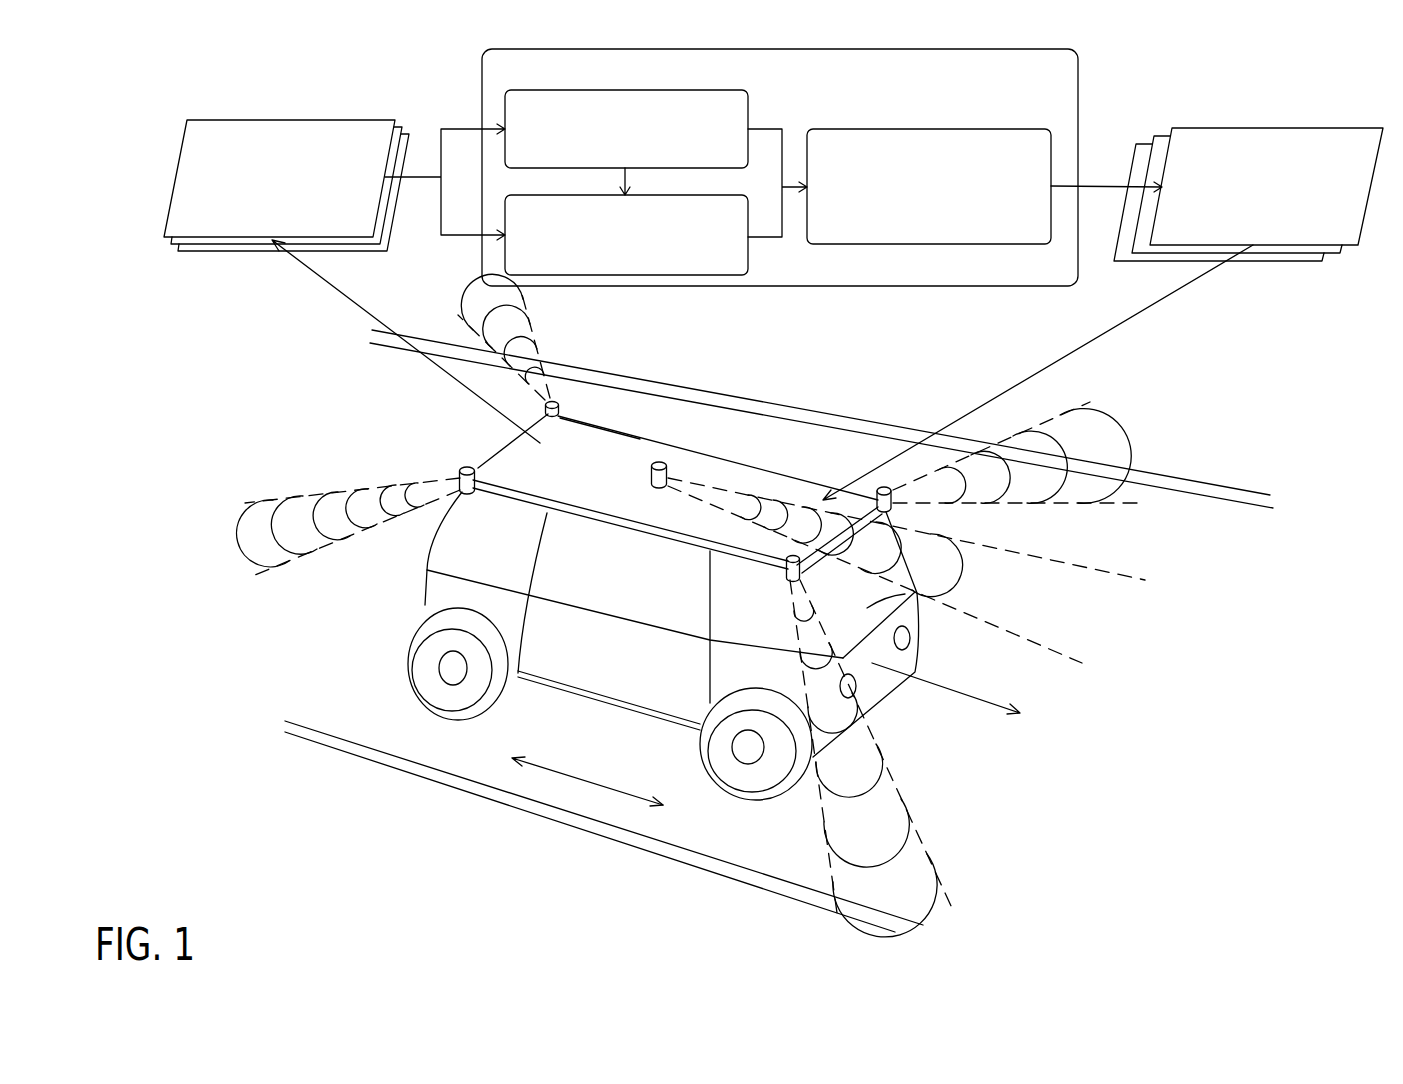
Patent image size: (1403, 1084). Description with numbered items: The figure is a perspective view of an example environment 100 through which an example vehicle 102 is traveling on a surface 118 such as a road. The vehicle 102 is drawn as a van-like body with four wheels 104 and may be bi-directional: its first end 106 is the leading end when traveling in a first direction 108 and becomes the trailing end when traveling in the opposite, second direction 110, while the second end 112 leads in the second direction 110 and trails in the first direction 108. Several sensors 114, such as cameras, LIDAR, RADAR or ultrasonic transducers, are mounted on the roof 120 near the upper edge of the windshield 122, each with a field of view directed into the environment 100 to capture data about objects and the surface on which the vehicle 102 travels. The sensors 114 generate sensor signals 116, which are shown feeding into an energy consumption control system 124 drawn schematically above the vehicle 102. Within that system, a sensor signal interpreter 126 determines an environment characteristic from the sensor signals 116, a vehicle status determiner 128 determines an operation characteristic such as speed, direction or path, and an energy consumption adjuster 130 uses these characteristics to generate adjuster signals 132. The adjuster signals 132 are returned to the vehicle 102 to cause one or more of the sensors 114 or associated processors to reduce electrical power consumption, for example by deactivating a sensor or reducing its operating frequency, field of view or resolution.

The environment 100 is at (182, 80).
The vehicle 102 is at (752, 468).
The wheels 104 is at (428, 665).
The first end 106 is at (880, 692).
The first direction 108 is at (671, 815).
The second direction 110 is at (569, 775).
The second end 112 is at (435, 547).
The sensors 114 is at (556, 402).
The sensor signals 116 is at (352, 281).
The surface 118 is at (1000, 778).
The roof 120 is at (580, 450).
The windshield 122 is at (960, 613).
The energy consumption control system 124 is at (780, 167).
The sensor signal interpreter 126 is at (656, 163).
The vehicle status determiner 128 is at (626, 235).
The energy consumption adjuster 130 is at (984, 186).
The adjuster signals 132 is at (1248, 194).